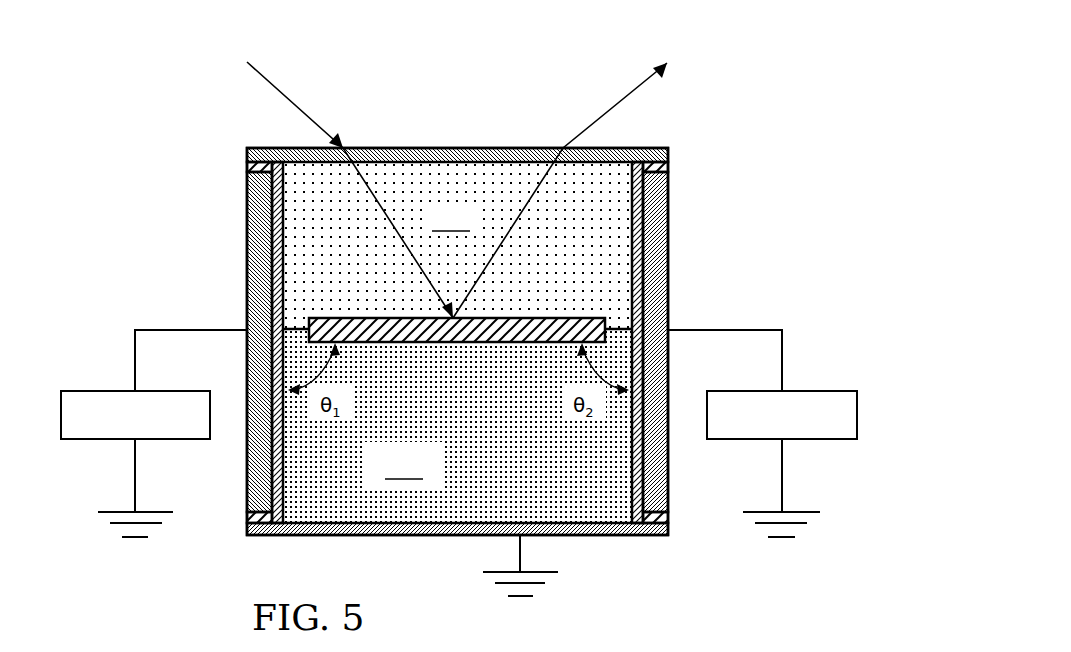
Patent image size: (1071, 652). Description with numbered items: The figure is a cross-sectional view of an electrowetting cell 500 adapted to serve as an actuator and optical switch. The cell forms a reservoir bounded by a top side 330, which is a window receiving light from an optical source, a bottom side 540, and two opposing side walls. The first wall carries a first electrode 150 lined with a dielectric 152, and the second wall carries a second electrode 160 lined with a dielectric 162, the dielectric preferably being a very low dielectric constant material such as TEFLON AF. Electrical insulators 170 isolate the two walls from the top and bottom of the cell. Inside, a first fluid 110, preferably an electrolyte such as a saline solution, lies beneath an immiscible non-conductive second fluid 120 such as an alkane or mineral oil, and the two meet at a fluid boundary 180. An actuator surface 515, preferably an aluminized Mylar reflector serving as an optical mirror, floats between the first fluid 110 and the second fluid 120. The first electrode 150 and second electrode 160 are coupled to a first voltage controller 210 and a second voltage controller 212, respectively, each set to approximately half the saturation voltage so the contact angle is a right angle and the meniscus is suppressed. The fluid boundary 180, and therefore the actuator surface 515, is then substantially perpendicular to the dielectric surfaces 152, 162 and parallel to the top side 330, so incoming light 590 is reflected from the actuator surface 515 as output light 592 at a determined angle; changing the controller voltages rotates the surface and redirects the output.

The electrowetting cell 500 is at (688, 127).
The first fluid 110 is at (457, 426).
The second fluid 120 is at (457, 245).
The first electrode 150 is at (247, 290).
The dielectric 152 is at (280, 236).
The second electrode 160 is at (668, 305).
The dielectric 162 is at (632, 183).
The electrical insulators 170 is at (247, 157).
The fluid boundary 180 is at (300, 321).
The first voltage controller 210 is at (110, 391).
The second voltage controller 212 is at (808, 391).
The top side 330 is at (410, 147).
The actuator surface 515 is at (481, 348).
The bottom side 540 is at (594, 535).
The light 590 is at (293, 100).
The reflected output light 592 is at (620, 100).